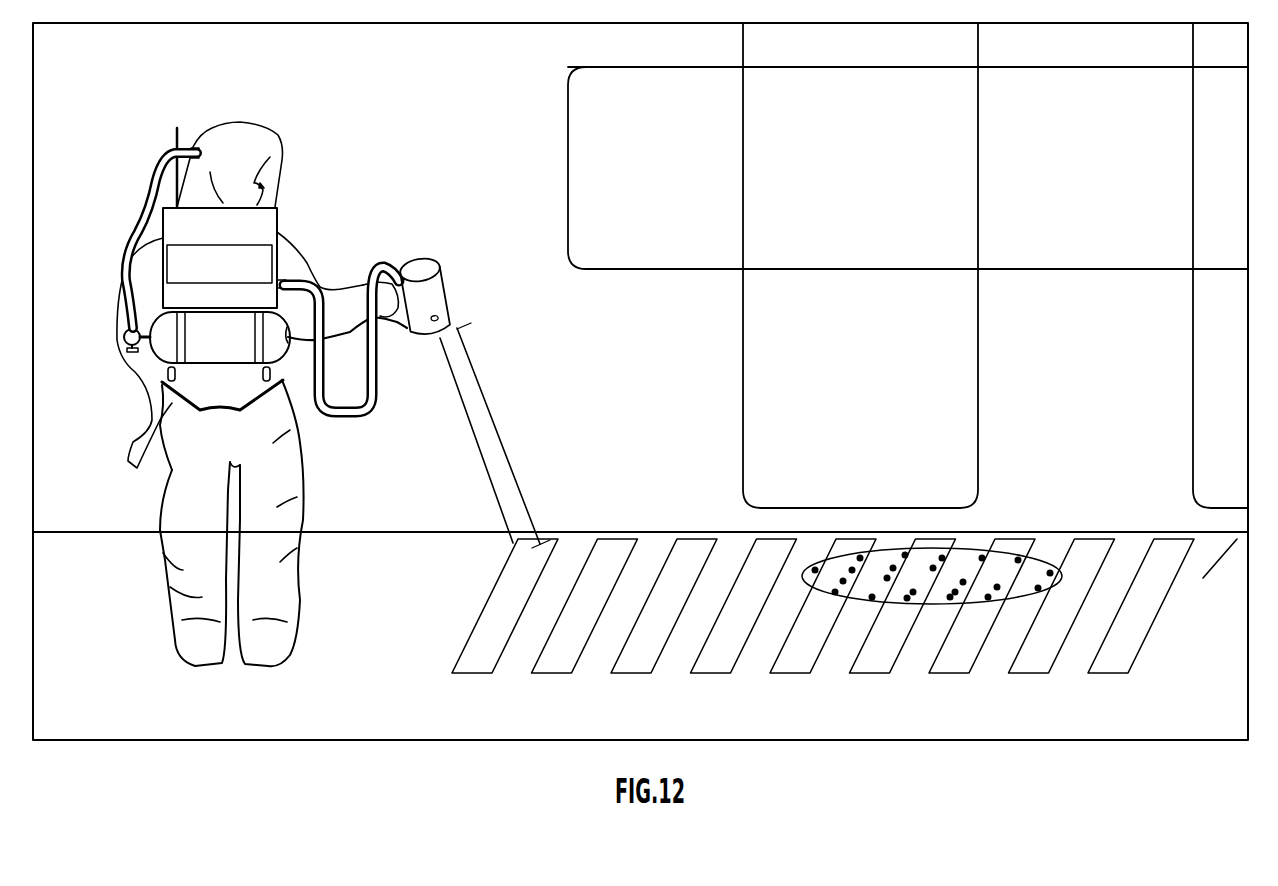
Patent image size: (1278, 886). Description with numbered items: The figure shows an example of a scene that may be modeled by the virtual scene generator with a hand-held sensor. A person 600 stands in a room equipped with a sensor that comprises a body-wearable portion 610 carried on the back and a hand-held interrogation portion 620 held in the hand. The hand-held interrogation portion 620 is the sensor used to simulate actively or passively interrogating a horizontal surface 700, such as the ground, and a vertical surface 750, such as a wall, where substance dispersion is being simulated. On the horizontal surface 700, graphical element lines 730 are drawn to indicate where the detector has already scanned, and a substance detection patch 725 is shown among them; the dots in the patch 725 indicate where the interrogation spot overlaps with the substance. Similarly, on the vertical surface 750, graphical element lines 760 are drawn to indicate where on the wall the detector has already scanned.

The person 600 is at (97, 378).
The body-wearable portion 610 is at (265, 223).
The hand-held interrogation portion 620 is at (447, 280).
The horizontal surface 700 is at (414, 726).
The substance detection patch 725 is at (1030, 570).
The graphical element lines 730 is at (1207, 578).
The vertical surface 750 is at (655, 367).
The graphical element lines 760 is at (696, 67).